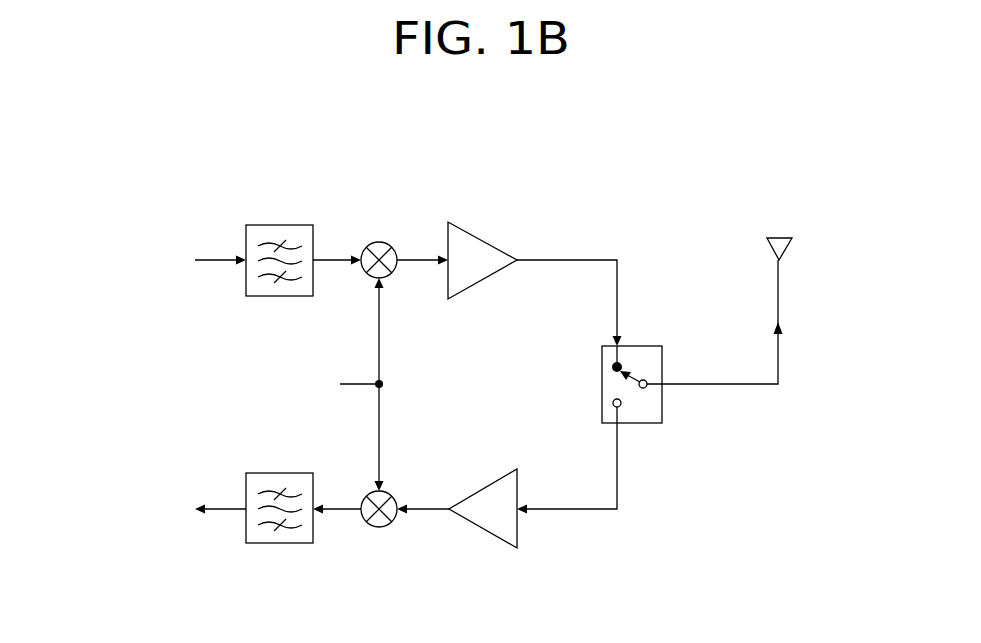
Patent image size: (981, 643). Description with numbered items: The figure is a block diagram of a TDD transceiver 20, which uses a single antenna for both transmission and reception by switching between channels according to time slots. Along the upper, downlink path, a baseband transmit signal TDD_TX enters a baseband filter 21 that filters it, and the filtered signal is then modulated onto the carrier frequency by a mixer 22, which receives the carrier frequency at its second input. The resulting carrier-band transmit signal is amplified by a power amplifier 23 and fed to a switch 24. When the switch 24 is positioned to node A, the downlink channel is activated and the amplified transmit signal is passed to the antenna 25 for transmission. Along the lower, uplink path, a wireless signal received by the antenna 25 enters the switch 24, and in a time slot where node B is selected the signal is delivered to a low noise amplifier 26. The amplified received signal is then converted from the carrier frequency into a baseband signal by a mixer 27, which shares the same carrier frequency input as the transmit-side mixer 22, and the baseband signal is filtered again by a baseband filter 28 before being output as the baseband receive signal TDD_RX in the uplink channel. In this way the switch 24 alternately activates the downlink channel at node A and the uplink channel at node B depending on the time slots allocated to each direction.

The TDD transceiver 20 is at (626, 141).
The baseband filter 21 is at (280, 296).
The mixer 22 is at (381, 240).
The power amplifier 23 is at (482, 238).
The switch 24 is at (645, 346).
The antenna 25 is at (778, 236).
The low noise amplifier 26 is at (483, 487).
The mixer 27 is at (379, 527).
The baseband filter 28 is at (280, 543).